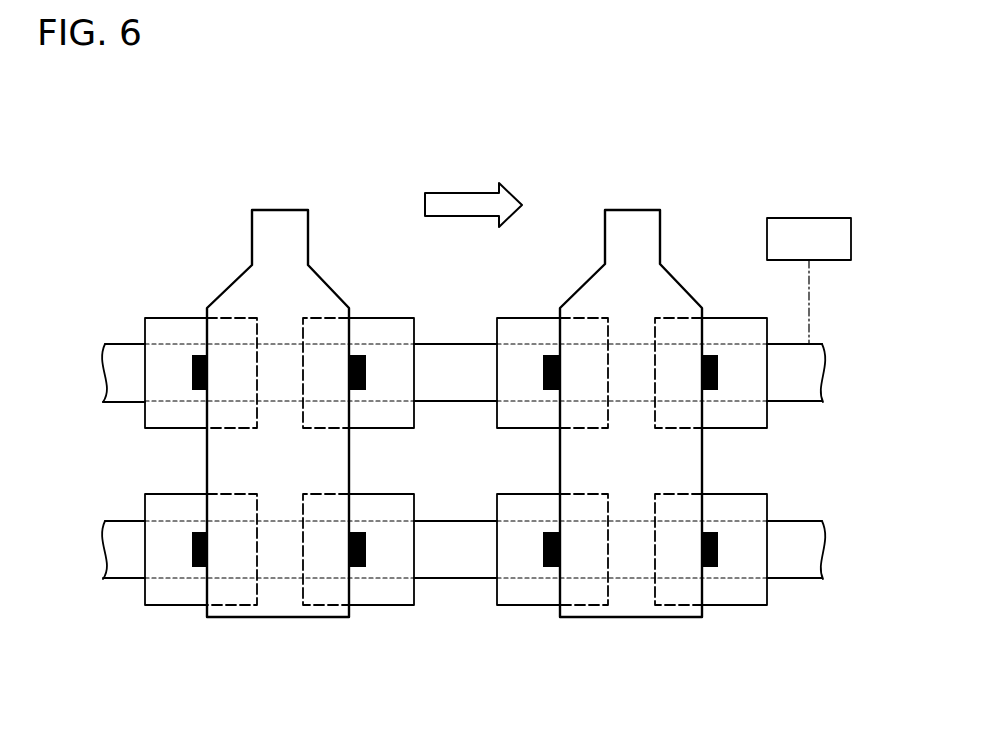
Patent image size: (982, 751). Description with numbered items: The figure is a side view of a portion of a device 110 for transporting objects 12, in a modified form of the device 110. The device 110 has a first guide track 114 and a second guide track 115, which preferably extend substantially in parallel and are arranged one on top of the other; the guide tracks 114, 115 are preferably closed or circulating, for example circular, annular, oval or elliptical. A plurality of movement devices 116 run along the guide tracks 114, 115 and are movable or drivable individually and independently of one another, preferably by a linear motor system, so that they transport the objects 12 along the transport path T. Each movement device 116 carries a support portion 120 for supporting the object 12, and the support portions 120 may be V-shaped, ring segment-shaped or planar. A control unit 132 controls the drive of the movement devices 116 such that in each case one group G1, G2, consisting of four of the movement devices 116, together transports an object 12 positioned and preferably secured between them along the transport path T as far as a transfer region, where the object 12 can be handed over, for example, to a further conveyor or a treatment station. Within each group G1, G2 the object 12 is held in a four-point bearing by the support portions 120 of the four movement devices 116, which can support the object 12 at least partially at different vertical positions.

The device 110 is at (500, 70).
The object 12 is at (278, 605).
The first guide track 114 is at (793, 553).
The second guide track 115 is at (802, 360).
The movement device 116 is at (168, 318).
The support portion 120 is at (192, 380).
The control unit 132 is at (803, 230).
The transport path T is at (440, 202).
The first group G1 is at (571, 216).
The second group G2 is at (183, 244).